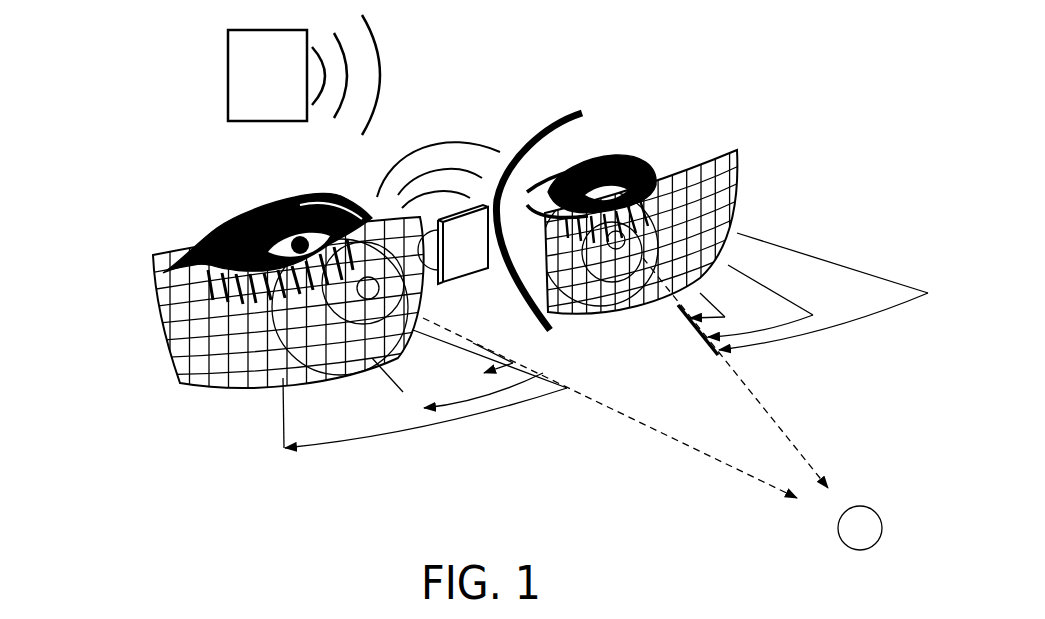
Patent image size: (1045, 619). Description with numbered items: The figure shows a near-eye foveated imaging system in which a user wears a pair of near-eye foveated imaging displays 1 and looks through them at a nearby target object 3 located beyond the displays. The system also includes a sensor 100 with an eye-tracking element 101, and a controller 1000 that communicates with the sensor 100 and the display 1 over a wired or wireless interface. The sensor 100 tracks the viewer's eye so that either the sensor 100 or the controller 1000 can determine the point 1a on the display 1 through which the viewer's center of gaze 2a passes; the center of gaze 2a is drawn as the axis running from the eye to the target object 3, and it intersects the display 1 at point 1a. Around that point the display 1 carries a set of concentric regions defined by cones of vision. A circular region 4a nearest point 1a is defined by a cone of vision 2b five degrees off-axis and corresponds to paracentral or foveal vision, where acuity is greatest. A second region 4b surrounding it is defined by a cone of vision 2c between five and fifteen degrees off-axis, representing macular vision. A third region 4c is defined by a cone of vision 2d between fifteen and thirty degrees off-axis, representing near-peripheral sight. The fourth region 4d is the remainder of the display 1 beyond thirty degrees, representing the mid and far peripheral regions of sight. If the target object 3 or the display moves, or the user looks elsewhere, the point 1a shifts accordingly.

The near-eye foveated imaging display 1 is at (148, 320).
The point on the display 1a is at (361, 299).
The center of gaze 2a is at (687, 450).
The cone of vision 2b is at (452, 362).
The cone of vision 2c is at (401, 395).
The cone of vision 2d is at (273, 418).
The target object 3 is at (849, 538).
The circular region 4a is at (656, 222).
The second region 4b is at (687, 223).
The third region 4c is at (737, 217).
The fourth region 4d is at (743, 212).
The sensor 100 is at (470, 230).
The eye-tracking element 101 is at (423, 226).
The controller 1000 is at (292, 83).